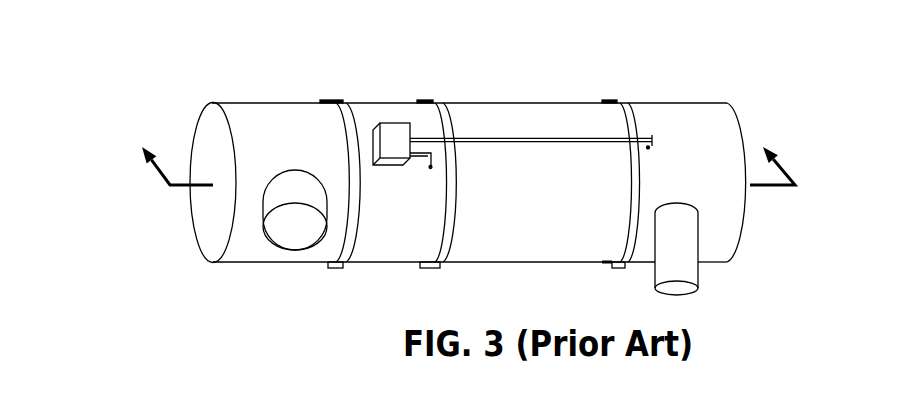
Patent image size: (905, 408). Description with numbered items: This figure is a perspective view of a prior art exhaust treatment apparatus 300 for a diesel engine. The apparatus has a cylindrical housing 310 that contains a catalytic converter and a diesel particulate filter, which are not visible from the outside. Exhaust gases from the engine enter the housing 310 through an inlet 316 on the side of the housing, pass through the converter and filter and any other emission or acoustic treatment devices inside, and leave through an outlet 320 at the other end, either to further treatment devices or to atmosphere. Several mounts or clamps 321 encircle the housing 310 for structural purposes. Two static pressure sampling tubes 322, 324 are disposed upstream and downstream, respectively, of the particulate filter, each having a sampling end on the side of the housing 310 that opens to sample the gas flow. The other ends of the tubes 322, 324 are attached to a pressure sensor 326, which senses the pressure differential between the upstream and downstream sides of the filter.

The exhaust treatment apparatus 300 is at (157, 50).
The housing 310 is at (663, 103).
The inlet 316 is at (295, 237).
The outlet 320 is at (692, 277).
The mounts or clamps 321 is at (619, 103).
The static pressure sampling tube 322 is at (420, 158).
The static pressure sampling tube 324 is at (512, 142).
The pressure sensor 326 is at (395, 135).